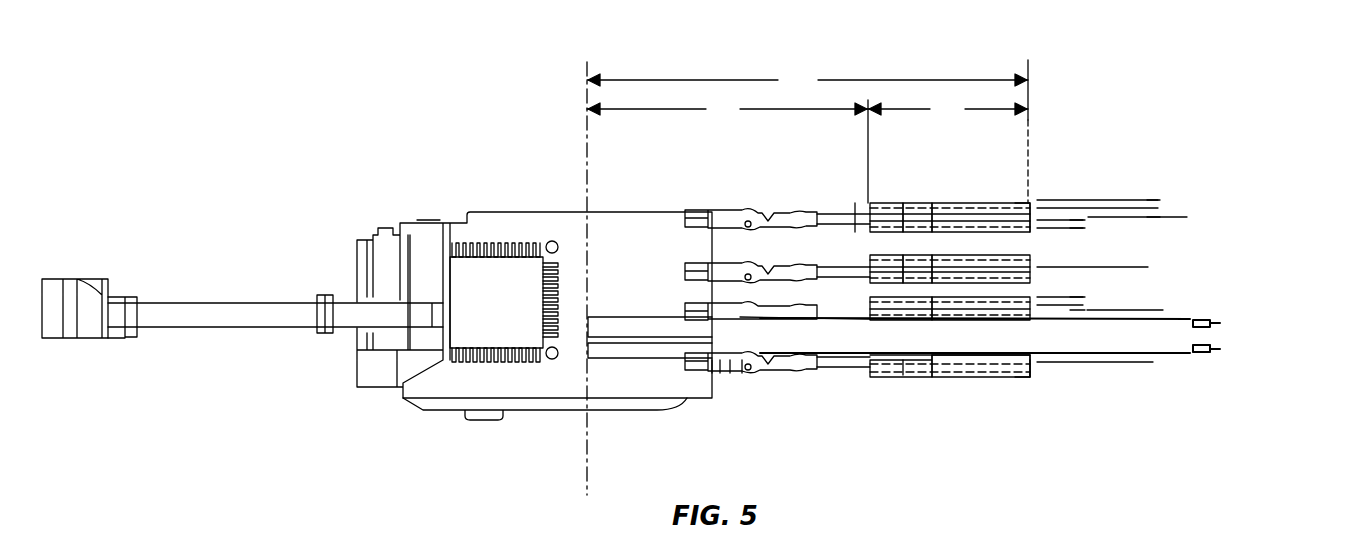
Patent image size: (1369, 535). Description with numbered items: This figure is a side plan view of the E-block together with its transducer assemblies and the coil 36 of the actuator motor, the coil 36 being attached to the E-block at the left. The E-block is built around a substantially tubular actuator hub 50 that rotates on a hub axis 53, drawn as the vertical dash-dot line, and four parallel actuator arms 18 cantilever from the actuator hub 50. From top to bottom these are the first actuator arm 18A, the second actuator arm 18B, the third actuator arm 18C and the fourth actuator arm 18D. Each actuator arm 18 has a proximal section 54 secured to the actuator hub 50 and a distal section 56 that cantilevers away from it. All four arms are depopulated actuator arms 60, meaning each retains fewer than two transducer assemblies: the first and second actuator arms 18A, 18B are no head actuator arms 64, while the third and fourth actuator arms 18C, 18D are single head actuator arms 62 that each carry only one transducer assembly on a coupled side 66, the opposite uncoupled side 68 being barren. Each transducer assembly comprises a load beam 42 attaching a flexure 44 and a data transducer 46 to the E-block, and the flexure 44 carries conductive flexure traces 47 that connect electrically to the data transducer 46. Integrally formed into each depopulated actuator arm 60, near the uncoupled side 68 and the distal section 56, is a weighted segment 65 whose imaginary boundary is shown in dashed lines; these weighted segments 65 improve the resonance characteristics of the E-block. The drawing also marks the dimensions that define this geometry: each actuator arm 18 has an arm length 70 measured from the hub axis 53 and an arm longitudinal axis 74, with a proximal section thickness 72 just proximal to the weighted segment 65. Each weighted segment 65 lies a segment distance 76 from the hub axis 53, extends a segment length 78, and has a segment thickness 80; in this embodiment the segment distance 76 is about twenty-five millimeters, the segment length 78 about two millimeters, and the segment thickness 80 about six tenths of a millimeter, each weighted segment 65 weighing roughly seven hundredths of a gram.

The coil 36 is at (214, 300).
The actuator hub 50 is at (496, 212).
The hub axis 53 is at (590, 68).
The actuator arm 18 is at (766, 297).
The first actuator arm 18A is at (744, 229).
The second actuator arm 18B is at (760, 276).
The third actuator arm 18C is at (770, 324).
The fourth actuator arm 18D is at (781, 373).
The proximal section 54 is at (715, 374).
The flexure traces 47 is at (737, 374).
The depopulated actuator arm 60 is at (881, 384).
The weighted segment 65 is at (903, 232).
The uncoupled side 68 is at (898, 203).
The no head actuator arm 64 is at (1021, 196).
The coupled side 66 is at (903, 321).
The distal section 56 is at (1027, 385).
The single head actuator arm 62 is at (1039, 377).
The arm longitudinal axis 74 is at (1173, 212).
The flexure 44 is at (1188, 318).
The load beam 42 is at (1118, 357).
The data transducer 46 is at (1211, 344).
The arm length 70 is at (807, 131).
The segment distance 76 is at (727, 148).
The segment length 78 is at (948, 108).
The proximal section thickness 72 is at (855, 244).
The segment thickness 80 is at (1150, 242).